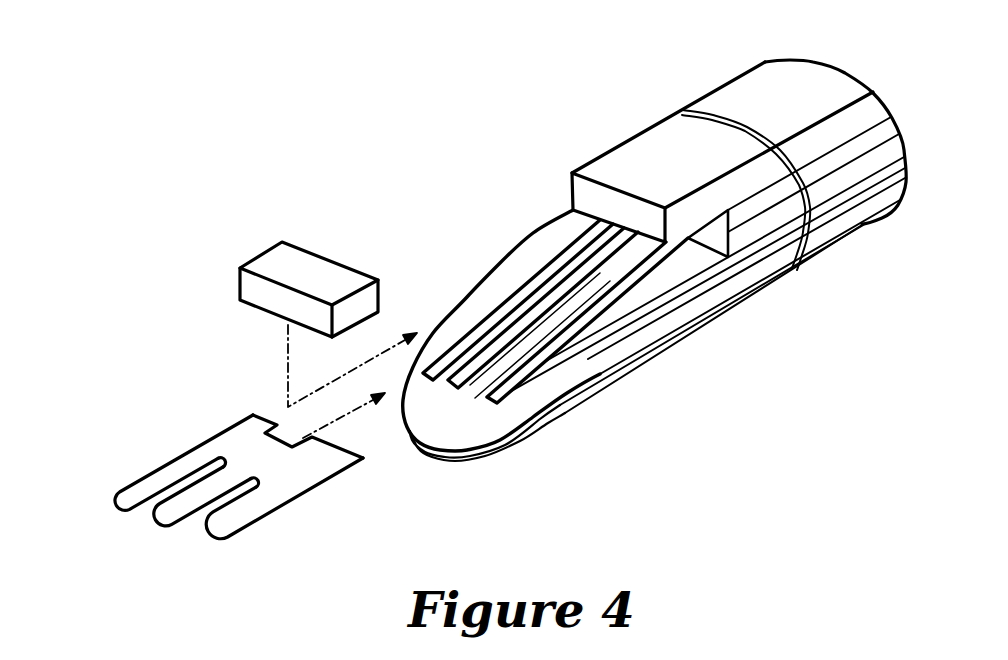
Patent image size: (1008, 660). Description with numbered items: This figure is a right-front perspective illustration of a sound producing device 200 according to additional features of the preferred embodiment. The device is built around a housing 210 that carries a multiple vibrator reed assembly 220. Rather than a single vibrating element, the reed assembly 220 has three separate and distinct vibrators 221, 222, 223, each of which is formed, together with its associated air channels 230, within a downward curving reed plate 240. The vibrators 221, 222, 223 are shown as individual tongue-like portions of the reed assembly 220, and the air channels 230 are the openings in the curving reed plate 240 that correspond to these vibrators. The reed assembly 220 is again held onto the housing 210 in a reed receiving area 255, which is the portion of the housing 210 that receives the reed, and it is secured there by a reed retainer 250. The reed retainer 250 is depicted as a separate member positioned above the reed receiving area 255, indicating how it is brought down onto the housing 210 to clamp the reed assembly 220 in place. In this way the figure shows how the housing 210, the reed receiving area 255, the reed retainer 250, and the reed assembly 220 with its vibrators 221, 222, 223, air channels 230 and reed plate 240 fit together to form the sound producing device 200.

The sound producing device 200 is at (258, 112).
The housing 210 is at (613, 147).
The multiple vibrator reed assembly 220 is at (206, 426).
The vibrator 221 is at (133, 492).
The vibrator 222 is at (157, 507).
The vibrator 223 is at (223, 522).
The air channels 230 is at (462, 345).
The downward curving reed plate 240 is at (435, 417).
The reed retainer 250 is at (327, 262).
The reed receiving area 255 is at (712, 233).